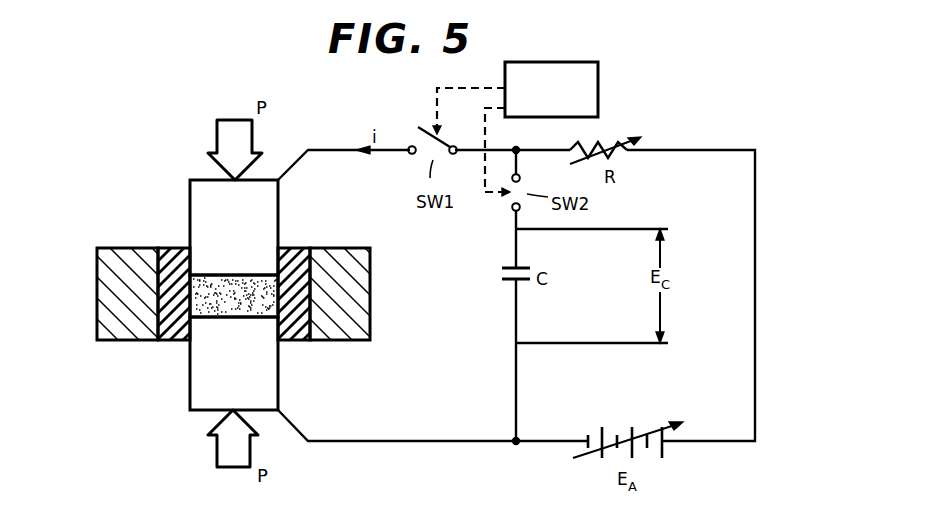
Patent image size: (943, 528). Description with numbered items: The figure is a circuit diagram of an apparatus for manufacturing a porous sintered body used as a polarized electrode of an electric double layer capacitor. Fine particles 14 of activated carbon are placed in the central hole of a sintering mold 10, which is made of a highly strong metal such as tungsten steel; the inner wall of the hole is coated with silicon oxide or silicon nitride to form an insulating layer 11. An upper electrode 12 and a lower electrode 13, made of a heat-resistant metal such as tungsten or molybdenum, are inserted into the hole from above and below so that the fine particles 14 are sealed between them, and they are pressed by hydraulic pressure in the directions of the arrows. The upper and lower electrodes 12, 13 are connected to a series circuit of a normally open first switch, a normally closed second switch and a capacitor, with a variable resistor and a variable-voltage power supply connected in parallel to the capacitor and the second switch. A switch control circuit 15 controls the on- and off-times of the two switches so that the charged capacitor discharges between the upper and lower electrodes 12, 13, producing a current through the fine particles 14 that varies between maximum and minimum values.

The sintering mold 10 is at (102, 286).
The insulating layer 11 is at (172, 330).
The upper electrode 12 is at (198, 215).
The lower electrode 13 is at (196, 376).
The fine particles 14 is at (238, 274).
The switch control circuit 15 is at (588, 75).